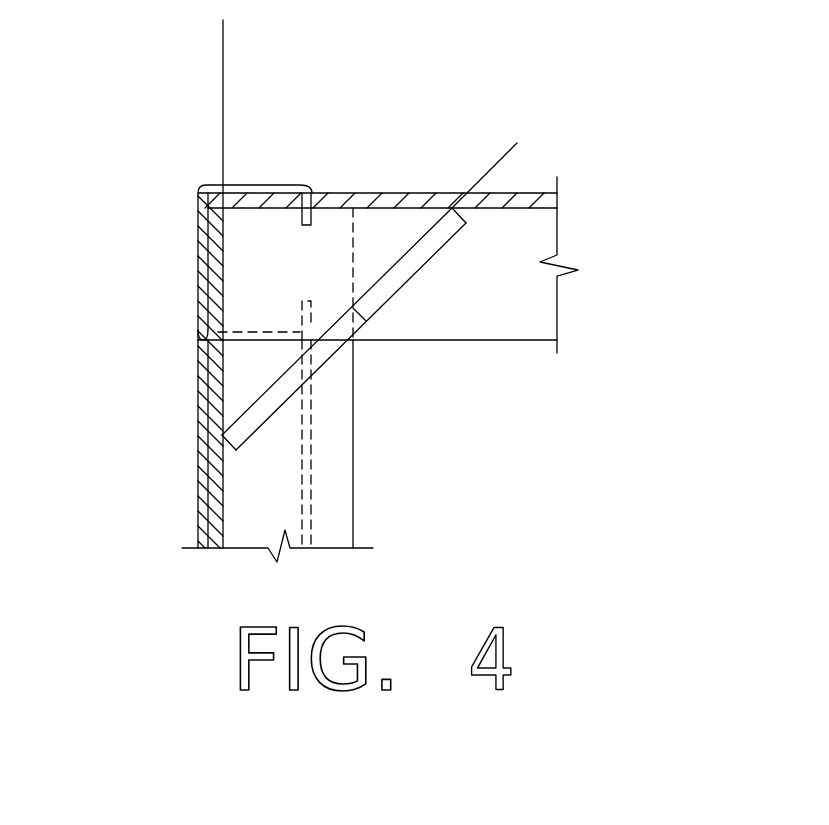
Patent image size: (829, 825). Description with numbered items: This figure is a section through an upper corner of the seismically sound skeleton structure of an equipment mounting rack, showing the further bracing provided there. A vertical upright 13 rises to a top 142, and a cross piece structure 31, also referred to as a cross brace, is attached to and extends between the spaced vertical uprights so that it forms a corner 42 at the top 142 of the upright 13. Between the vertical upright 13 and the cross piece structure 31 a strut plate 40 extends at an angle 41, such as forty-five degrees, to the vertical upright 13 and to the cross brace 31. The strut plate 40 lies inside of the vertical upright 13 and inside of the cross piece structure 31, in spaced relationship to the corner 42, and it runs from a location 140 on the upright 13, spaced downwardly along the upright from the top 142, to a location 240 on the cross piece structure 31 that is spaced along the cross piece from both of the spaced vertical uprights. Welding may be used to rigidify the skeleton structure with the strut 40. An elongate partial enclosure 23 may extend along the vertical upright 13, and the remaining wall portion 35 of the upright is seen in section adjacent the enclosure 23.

The vertical upright 13 is at (353, 495).
The elongate partial enclosure 23 is at (198, 495).
The cross piece structure 31 is at (425, 220).
The wall panel 35 is at (198, 297).
The strut plate 40 is at (377, 329).
The angle 41 is at (223, 30).
The corner 42 is at (243, 232).
The location on vertical upright 140 is at (222, 437).
The top of vertical upright 142 is at (189, 218).
The location on cross piece structure 240 is at (377, 158).